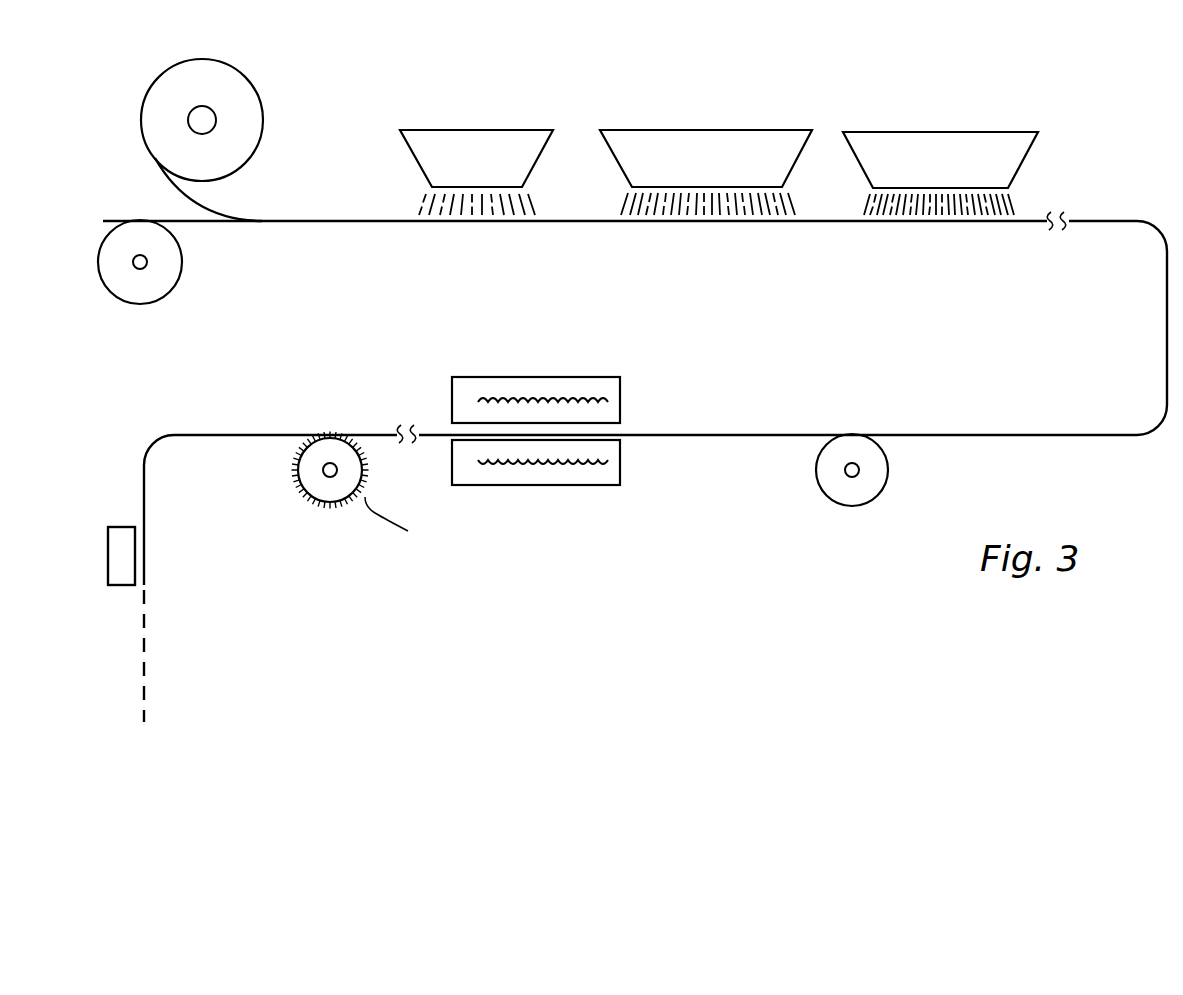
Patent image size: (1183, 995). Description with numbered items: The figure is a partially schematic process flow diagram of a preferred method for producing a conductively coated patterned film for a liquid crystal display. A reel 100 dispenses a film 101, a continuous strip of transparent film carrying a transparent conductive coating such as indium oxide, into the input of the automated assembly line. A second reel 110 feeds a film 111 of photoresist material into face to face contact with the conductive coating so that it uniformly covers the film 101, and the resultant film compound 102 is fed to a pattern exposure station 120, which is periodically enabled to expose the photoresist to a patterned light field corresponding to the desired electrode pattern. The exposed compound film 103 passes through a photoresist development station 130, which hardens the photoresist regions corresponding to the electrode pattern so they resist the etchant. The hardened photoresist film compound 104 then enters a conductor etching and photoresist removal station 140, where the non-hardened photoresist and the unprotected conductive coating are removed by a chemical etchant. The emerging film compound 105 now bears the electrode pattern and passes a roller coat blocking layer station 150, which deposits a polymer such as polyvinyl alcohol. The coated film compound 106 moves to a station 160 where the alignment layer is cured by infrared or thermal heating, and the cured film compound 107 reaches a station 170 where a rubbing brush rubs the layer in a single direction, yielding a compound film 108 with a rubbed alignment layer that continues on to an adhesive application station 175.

The reel 100 is at (160, 297).
The film 101 is at (188, 229).
The film compound 102 is at (392, 218).
The exposed compound film 103 is at (560, 219).
The hardened photoresist film compound 104 is at (819, 219).
The film compound 105 is at (984, 433).
The film compound 106 is at (737, 433).
The cured film compound 107 is at (378, 432).
The compound film 108 is at (210, 432).
The reel 110 is at (250, 92).
The film 111 is at (222, 215).
The pattern exposure station 120 is at (471, 130).
The photoresist development station 130 is at (715, 130).
The conductor etching and photoresist removal station 140 is at (977, 132).
The roller coat blocking layer station 150 is at (832, 499).
The station 160 is at (612, 377).
The station 170 is at (298, 498).
The adhesive application station 175 is at (121, 527).